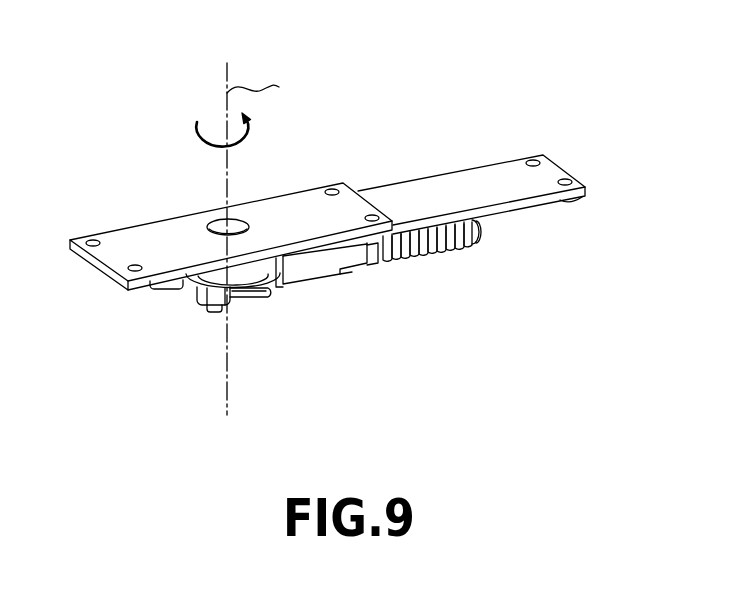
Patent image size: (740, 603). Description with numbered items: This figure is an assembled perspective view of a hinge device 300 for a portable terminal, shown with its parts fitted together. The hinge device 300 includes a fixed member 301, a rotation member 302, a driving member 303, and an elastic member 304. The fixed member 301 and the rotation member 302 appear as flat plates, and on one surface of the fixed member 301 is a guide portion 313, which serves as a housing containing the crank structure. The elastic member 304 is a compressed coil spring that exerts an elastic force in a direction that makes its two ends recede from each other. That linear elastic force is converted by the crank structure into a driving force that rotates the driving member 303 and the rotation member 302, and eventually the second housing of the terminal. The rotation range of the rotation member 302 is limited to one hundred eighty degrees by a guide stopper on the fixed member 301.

The hinge device 300 is at (396, 40).
The fixed member 301 is at (440, 179).
The rotation member 302 is at (150, 230).
The driving member 303 is at (217, 310).
The elastic member 304 is at (439, 250).
The guide portion 313 is at (318, 267).